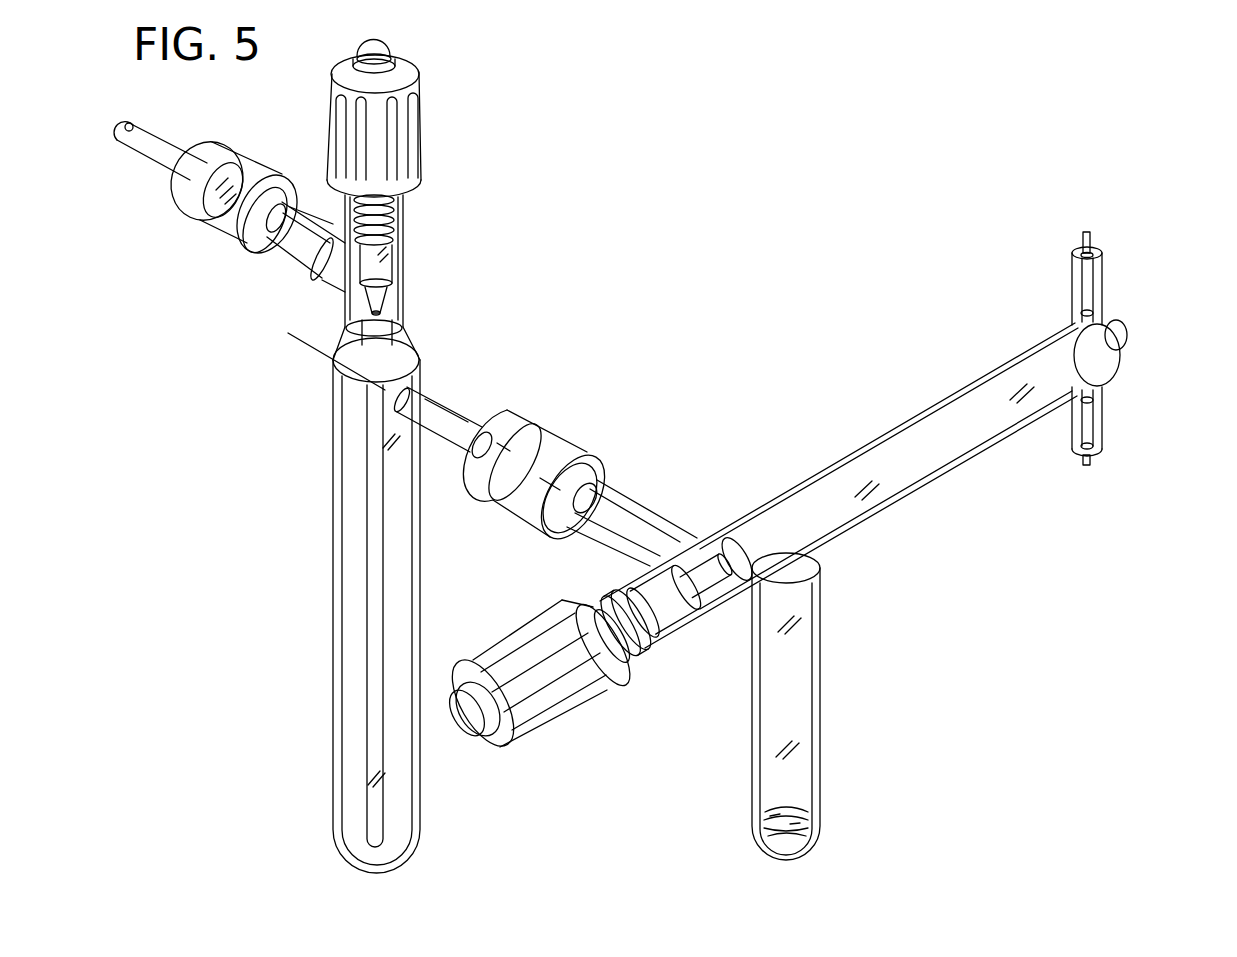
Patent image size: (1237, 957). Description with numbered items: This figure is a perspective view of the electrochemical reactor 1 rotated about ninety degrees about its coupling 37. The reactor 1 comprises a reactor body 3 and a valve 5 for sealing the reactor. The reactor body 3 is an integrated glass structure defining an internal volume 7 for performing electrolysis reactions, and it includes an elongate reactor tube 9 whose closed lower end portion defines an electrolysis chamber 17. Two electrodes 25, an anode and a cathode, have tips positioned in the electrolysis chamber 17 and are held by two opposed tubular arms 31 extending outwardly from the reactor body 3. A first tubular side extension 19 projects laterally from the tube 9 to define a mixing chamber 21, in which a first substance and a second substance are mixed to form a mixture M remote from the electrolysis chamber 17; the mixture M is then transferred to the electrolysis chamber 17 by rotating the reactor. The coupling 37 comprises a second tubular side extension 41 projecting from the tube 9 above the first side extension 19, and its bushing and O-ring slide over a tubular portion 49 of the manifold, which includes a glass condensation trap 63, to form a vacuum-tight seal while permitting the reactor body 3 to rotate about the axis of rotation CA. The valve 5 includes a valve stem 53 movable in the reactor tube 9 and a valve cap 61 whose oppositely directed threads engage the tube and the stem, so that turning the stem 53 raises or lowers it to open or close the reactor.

The electrochemical reactor 1 is at (819, 242).
The reactor body 3 is at (808, 448).
The valve 5 is at (565, 795).
The internal volume 7 is at (940, 440).
The elongate reactor tube 9 is at (905, 420).
The electrolysis chamber 17 is at (1062, 362).
The first tubular side extension 19 is at (818, 722).
The mixing chamber 21 is at (781, 797).
The electrodes 25 is at (1092, 350).
The tubular arms 31 is at (1075, 283).
The coupling 37 is at (548, 382).
The second tubular side extension 41 is at (648, 518).
The tubular portion 49 is at (446, 396).
The valve stem 53 is at (690, 584).
The valve cap 61 is at (530, 653).
The glass condensation trap 63 is at (345, 605).
The axis of rotation CA is at (305, 348).
The mixture M is at (790, 843).